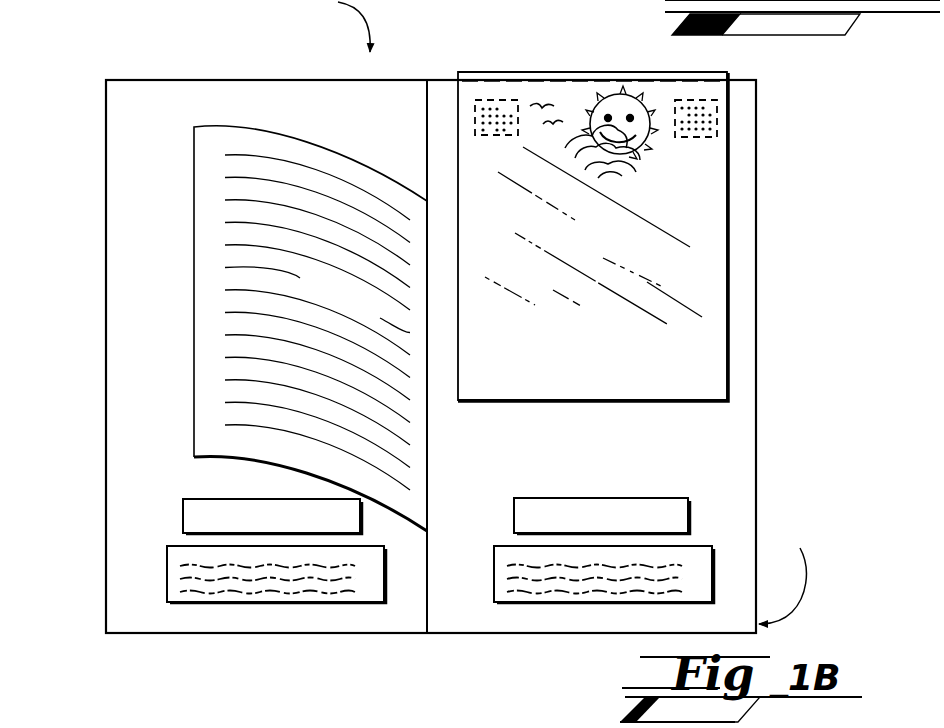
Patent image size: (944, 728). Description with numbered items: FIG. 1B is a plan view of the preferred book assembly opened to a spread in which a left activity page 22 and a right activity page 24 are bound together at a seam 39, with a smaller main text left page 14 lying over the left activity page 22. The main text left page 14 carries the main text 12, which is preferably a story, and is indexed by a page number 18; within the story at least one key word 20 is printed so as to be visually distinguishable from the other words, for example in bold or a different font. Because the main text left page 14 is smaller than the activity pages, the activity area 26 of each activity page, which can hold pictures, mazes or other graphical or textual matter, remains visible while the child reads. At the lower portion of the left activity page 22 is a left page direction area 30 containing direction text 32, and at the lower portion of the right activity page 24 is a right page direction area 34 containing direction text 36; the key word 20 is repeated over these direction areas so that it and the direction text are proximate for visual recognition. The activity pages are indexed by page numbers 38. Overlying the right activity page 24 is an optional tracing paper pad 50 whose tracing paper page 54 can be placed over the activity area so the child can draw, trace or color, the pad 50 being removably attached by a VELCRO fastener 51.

The main text 12 is at (280, 270).
The main text left page 14 is at (225, 150).
The page number 18 is at (194, 448).
The key word 20 is at (232, 276).
The left activity page 22 is at (135, 108).
The right activity page 24 is at (742, 103).
The activity area 26 is at (168, 400).
The left page direction area 30 is at (190, 604).
The direction text 32 is at (246, 603).
The right page direction area 34 is at (508, 603).
The direction text 36 is at (570, 603).
The page number 38 is at (124, 612).
The seam 39 is at (427, 111).
The tracing paper pad 50 is at (642, 243).
The VELCRO fastener 51 is at (497, 100).
The tracing paper page 54 is at (531, 402).